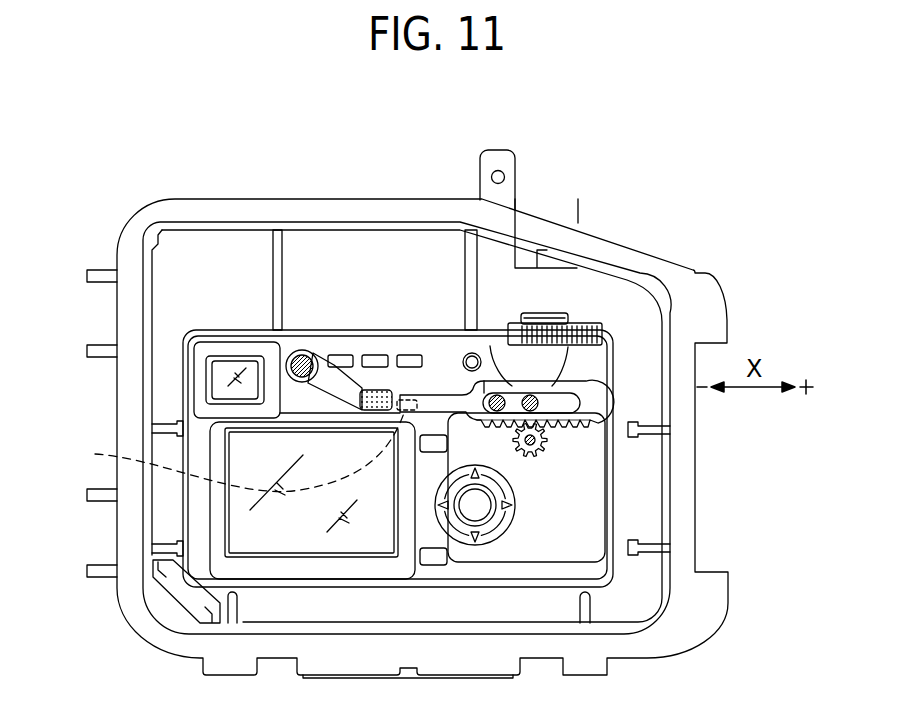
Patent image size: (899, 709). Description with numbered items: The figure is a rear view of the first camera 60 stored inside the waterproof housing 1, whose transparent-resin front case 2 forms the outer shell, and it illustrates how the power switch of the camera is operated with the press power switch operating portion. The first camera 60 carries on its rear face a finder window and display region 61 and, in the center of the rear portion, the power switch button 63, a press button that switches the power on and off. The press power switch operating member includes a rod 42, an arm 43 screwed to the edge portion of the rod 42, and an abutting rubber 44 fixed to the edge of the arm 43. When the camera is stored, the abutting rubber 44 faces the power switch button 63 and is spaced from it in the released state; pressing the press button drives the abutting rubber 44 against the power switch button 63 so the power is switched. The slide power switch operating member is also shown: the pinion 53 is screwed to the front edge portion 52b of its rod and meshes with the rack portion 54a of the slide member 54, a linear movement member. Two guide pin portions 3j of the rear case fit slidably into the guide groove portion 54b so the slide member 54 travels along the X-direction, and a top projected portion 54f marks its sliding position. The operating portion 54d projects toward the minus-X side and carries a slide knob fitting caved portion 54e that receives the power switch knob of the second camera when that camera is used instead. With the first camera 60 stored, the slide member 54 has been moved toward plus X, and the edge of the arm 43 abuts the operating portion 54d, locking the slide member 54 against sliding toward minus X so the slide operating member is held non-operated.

The waterproof housing 1 is at (138, 165).
The front case 2 is at (123, 250).
The guide pin portions 3j is at (528, 396).
The rod 42 is at (303, 350).
The arm 43 is at (324, 356).
The abutting rubber 44 is at (362, 390).
The front edge portion 52b is at (532, 455).
The pinion 53 is at (541, 452).
The slide member 54 is at (603, 356).
The rack portion 54a is at (580, 428).
The guide groove portion 54b is at (575, 390).
The operating portion 54d is at (437, 396).
The slide knob fitting caved portion 54e is at (220, 451).
The top projected portion 54f is at (562, 390).
The first camera 60 is at (176, 348).
The viewfinder 61 is at (186, 403).
The power switch button 63 is at (397, 394).